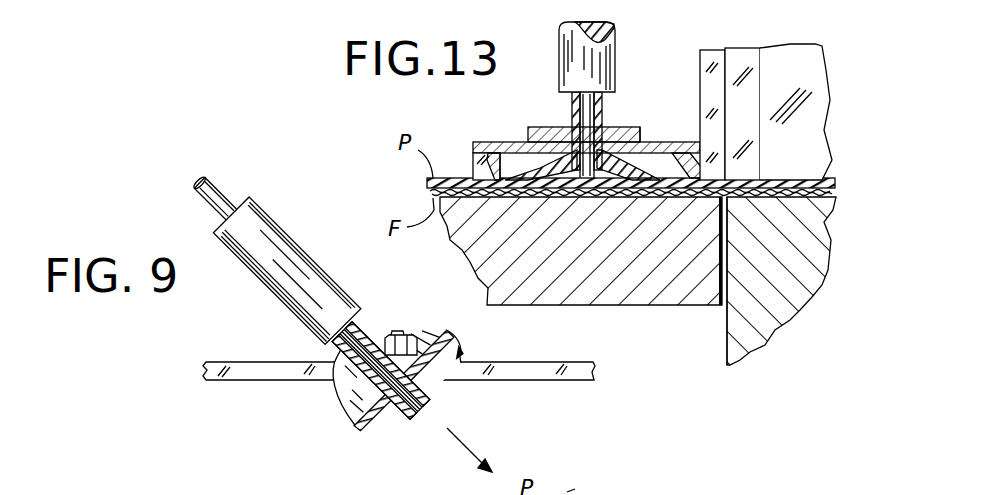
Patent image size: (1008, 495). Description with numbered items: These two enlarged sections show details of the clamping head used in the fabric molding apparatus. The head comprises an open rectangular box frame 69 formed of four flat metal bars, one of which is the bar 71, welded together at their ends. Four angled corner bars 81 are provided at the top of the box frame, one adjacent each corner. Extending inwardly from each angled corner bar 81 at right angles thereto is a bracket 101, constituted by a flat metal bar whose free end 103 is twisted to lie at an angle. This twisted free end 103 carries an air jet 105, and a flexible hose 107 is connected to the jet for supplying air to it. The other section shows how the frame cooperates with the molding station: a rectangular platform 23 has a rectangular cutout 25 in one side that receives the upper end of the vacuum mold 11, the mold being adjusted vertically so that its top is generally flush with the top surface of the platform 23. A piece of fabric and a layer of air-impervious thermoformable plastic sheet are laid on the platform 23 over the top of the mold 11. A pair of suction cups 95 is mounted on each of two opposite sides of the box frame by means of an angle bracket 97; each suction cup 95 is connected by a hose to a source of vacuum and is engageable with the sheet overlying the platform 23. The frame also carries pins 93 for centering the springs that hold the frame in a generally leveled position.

In FIG. 9, the flat metal bar 71 is at (156, 0).
In FIG. 9, the open rectangular box frame 69 is at (268, 17).
In FIG. 9, the angled corner bar 81 is at (226, 381).
In FIG. 9, the bracket 101 is at (400, 335).
In FIG. 9, the free end 103 is at (355, 428).
In FIG. 9, the air jet 105 is at (437, 397).
In FIG. 9, the flexible hose 107 is at (222, 191).
In FIG. 13, the vacuum mold 11 is at (727, 363).
In FIG. 13, the rectangular platform 23 is at (643, 306).
In FIG. 13, the rectangular cutout 25 is at (736, 298).
In FIG. 13, the pin 93 is at (725, 98).
In FIG. 13, the suction cup 95 is at (510, 150).
In FIG. 13, the angle bracket 97 is at (700, 52).